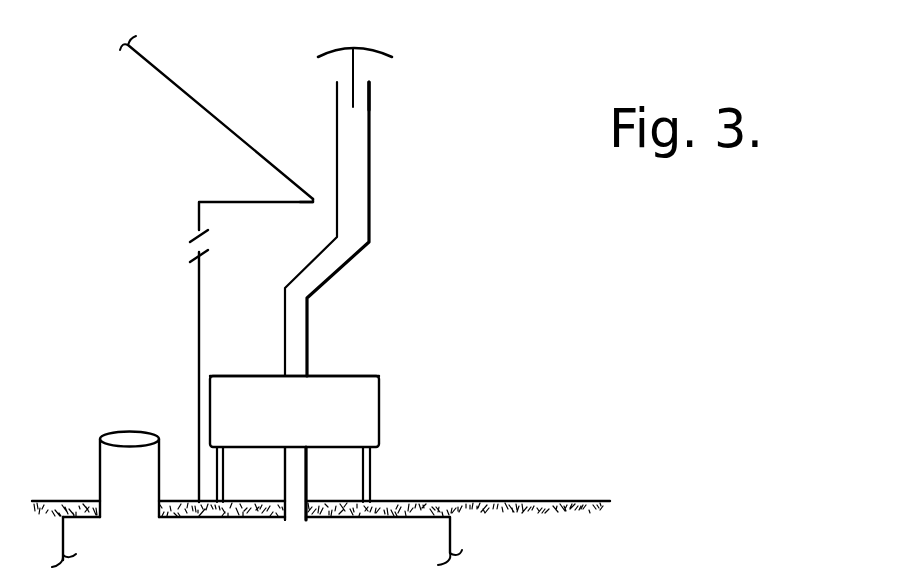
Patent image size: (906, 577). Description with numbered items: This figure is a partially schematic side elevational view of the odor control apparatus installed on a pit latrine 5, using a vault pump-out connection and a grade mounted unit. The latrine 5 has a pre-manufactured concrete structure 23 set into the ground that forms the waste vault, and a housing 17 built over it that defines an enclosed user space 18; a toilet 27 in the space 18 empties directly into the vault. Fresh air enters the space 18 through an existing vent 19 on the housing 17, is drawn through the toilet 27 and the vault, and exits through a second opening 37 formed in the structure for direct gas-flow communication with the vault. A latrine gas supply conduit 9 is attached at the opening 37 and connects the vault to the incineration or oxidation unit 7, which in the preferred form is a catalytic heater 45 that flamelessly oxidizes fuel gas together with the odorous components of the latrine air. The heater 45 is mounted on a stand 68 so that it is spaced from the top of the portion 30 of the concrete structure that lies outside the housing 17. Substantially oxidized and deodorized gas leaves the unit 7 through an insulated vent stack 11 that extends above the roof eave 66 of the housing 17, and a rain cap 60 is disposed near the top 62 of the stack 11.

The pit latrine 5 is at (86, 537).
The incineration or oxidation unit 7 is at (391, 411).
The latrine gas supply conduit 9 is at (309, 477).
The conduit or stack 11 is at (350, 260).
The housing 17 is at (185, 92).
The enclosed user space 18 is at (198, 313).
The vents 19 is at (205, 252).
The concrete structure 23 is at (452, 534).
The toilet 27 is at (99, 472).
The portion of the structure 30 is at (438, 514).
The second opening 37 is at (306, 521).
The catalytic heater 45 is at (352, 373).
The rain cap 60 is at (377, 47).
The top of the vent stack 62 is at (372, 88).
The roof eave 66 is at (320, 199).
The stand 68 is at (226, 470).